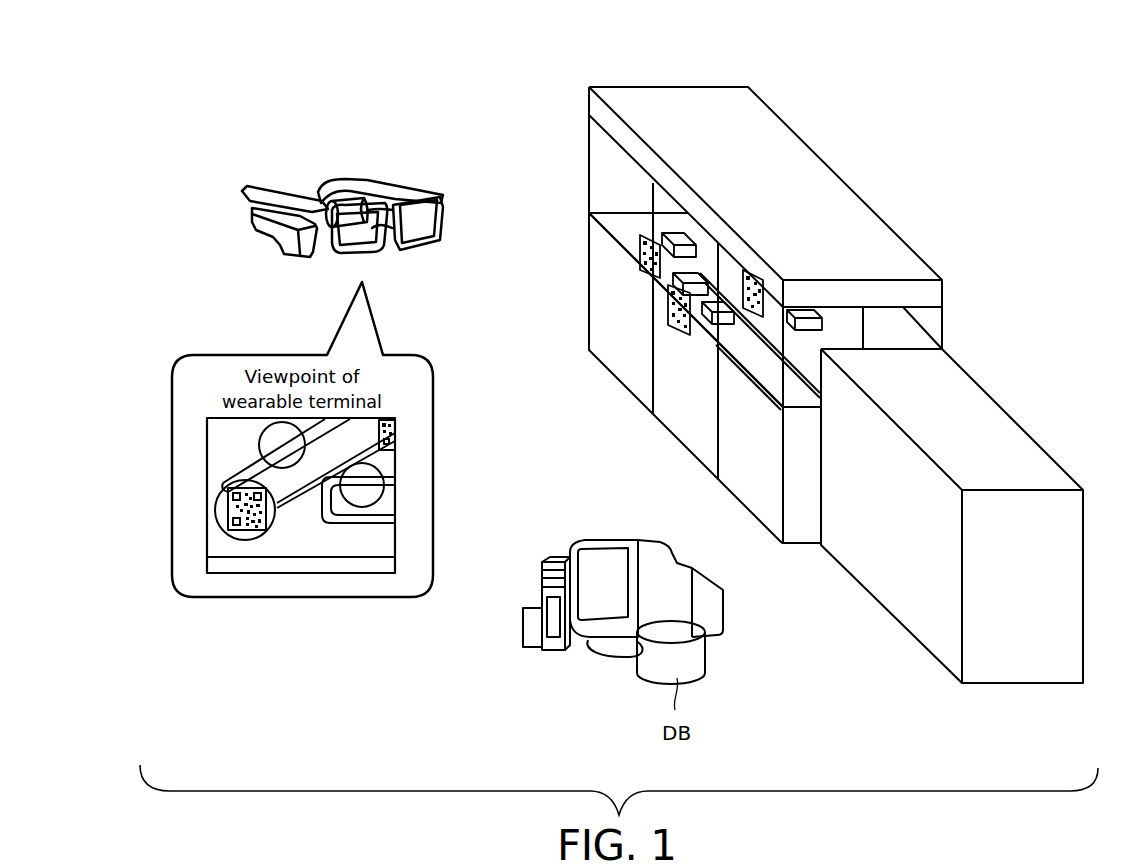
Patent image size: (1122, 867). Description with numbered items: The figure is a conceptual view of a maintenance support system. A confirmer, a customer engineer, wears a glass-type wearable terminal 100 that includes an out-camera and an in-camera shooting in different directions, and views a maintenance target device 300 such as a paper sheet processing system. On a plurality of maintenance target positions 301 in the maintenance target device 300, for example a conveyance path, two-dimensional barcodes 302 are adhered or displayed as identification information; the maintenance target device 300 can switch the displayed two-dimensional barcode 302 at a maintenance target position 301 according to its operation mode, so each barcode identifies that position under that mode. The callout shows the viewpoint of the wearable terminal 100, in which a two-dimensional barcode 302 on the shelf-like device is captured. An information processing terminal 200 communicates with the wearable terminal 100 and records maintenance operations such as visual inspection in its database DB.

The wearable terminal 100 is at (405, 185).
The information processing terminal 200 is at (607, 540).
The maintenance target device 300 is at (805, 143).
The maintenance target positions 301 is at (678, 236).
The two-dimensional barcodes 302 is at (650, 275).